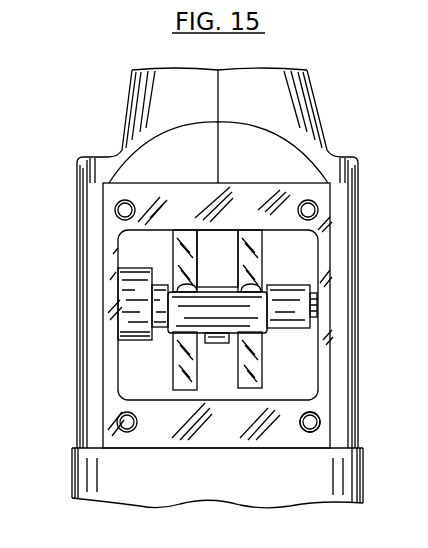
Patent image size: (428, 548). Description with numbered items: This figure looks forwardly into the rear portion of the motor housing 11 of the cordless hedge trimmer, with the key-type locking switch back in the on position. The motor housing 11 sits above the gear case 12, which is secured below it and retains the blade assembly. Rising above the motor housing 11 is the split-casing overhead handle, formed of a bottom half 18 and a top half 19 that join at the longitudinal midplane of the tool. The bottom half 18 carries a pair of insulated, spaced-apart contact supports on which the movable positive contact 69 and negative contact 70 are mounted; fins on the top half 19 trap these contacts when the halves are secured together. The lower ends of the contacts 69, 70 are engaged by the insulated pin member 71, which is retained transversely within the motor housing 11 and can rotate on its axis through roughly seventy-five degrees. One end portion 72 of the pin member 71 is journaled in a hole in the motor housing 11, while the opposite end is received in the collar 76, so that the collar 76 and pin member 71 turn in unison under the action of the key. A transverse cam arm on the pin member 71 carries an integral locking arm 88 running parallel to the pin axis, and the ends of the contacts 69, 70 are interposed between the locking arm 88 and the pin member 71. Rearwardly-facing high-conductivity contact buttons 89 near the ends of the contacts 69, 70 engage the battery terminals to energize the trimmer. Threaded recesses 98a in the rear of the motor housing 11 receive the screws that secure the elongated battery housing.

The motor housing 11 is at (77, 217).
The gear case 12 is at (72, 477).
The bottom half 18 is at (278, 107).
The top half 19 is at (163, 107).
The positive contact 69 is at (255, 367).
The negative contact 70 is at (173, 366).
The pin member 71 is at (278, 300).
The end portion 72 is at (318, 303).
The collar 76 is at (135, 302).
The locking arm 88 is at (220, 318).
The contact buttons 89 is at (250, 290).
The threaded recesses 98a is at (322, 421).